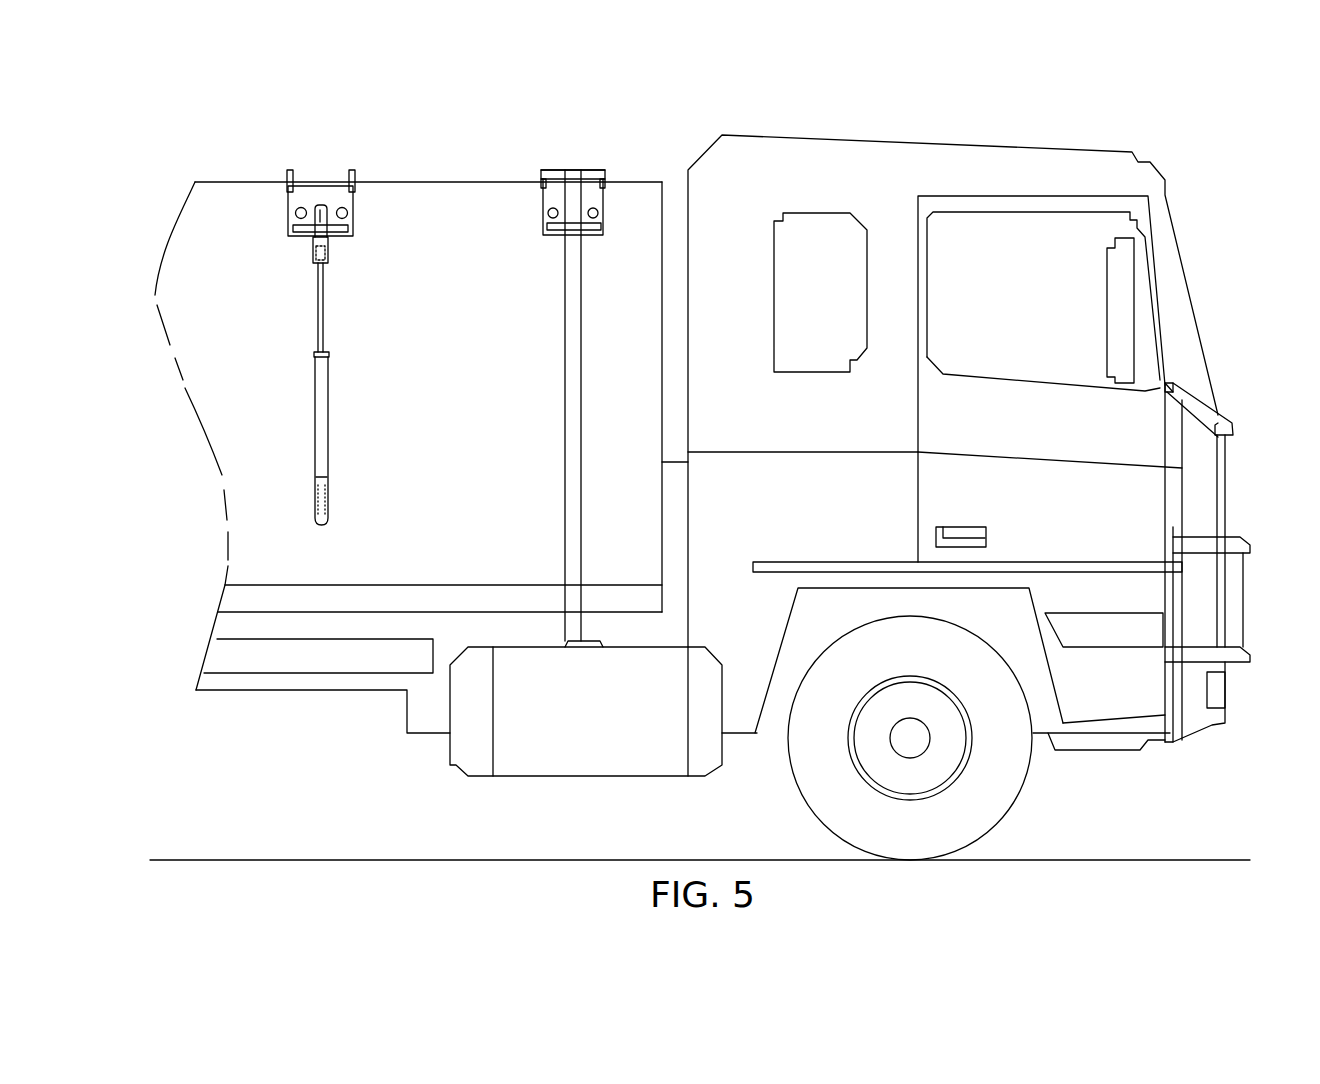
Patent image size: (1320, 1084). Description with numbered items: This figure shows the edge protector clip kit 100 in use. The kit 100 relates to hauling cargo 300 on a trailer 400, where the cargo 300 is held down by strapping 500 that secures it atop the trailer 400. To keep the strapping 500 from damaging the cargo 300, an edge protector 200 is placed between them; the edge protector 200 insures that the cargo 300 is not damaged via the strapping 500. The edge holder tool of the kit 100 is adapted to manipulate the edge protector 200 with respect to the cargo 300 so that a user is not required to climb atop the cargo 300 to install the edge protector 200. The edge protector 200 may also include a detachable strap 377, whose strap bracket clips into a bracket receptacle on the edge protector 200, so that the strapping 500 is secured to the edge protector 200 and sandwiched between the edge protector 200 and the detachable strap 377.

The edge protector clip kit 100 is at (272, 180).
The edge protector 200 is at (541, 212).
The cargo 300 is at (465, 182).
The detachable strap 377 is at (543, 172).
The trailer 400 is at (337, 690).
The strapping 500 is at (565, 401).